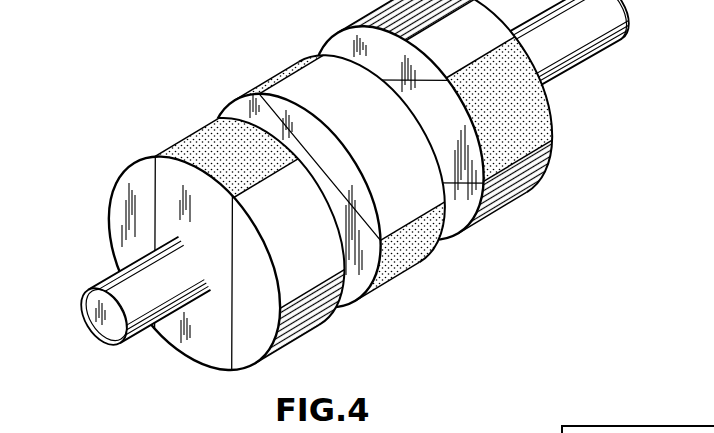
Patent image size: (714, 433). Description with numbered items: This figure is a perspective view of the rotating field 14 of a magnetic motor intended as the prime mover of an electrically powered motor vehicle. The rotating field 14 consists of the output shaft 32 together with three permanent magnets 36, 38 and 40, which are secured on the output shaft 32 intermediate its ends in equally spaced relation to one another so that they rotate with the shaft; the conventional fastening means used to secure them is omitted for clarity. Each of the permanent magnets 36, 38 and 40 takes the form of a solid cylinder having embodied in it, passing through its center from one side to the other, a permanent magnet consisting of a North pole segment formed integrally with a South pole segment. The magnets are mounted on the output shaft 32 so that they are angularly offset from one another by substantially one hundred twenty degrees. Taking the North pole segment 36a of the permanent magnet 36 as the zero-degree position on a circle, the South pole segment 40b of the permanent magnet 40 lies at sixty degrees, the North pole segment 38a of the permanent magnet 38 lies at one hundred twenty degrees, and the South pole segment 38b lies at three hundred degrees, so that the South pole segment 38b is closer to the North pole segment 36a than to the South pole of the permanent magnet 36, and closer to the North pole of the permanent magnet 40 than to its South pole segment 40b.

The rotating field 14 is at (337, 200).
The output shaft 32 is at (139, 336).
The permanent magnet 36 is at (194, 249).
The North pole segment 36a is at (185, 150).
The permanent magnet 38 is at (316, 186).
The North pole segment 38a is at (414, 256).
The South pole segment 38b is at (272, 81).
The permanent magnet 40 is at (452, 135).
The South pole segment 40b is at (548, 127).